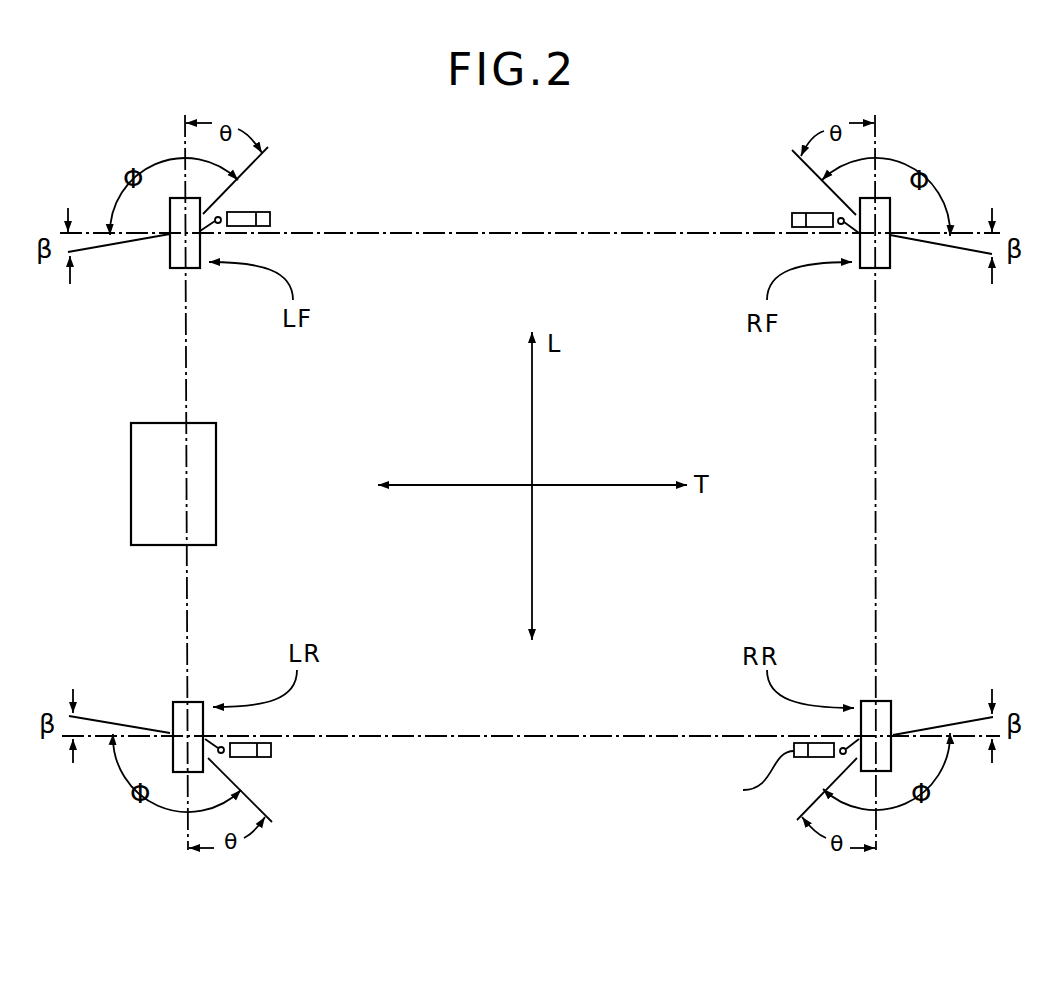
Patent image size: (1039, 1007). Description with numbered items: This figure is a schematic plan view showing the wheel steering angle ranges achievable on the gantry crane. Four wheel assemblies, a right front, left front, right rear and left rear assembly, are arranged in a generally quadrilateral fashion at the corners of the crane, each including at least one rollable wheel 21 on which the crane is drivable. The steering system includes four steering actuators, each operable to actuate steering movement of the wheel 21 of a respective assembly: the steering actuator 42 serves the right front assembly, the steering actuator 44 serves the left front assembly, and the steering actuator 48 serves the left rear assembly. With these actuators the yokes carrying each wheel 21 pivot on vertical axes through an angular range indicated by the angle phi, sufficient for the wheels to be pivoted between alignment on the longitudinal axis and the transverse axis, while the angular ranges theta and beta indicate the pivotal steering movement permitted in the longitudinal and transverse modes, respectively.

The wheel 21 is at (175, 257).
The steering actuator 42 is at (792, 218).
The steering actuator 44 is at (270, 215).
The steering actuator 48 is at (271, 752).